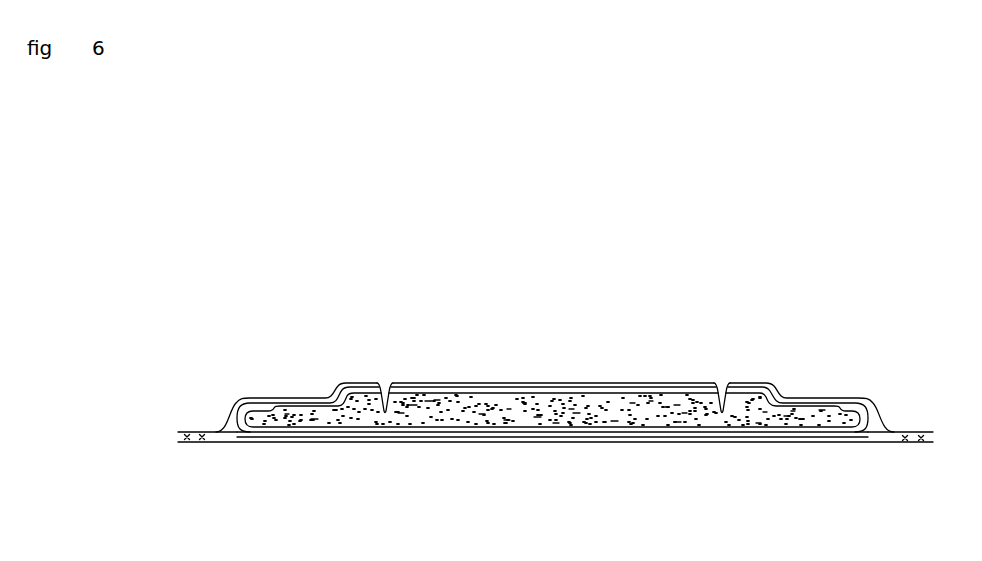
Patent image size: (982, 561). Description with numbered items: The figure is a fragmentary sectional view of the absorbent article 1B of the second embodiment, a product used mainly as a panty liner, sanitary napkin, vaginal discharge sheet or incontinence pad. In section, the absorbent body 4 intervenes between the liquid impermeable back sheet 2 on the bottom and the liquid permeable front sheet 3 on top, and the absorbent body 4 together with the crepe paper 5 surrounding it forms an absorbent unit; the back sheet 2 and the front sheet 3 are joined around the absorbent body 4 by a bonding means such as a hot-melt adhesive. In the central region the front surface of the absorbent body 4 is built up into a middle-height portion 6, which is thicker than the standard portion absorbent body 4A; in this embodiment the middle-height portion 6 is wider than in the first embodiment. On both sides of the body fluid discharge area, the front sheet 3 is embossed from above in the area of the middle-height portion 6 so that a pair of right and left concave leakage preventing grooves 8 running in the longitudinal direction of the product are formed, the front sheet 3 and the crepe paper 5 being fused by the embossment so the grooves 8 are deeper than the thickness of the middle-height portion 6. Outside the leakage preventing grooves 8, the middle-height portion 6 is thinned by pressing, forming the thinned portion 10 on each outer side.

The absorbent article 1B is at (555, 391).
The liquid impermeable back sheet 2 is at (698, 443).
The liquid permeable front sheet 3 is at (612, 382).
The absorbent body 4 is at (323, 438).
The standard portion absorbent body 4A is at (767, 436).
The crepe paper 5 is at (602, 438).
The middle-height portion 6 is at (673, 398).
The leakage preventing grooves 8 is at (722, 396).
The thinned portion 10 is at (323, 375).